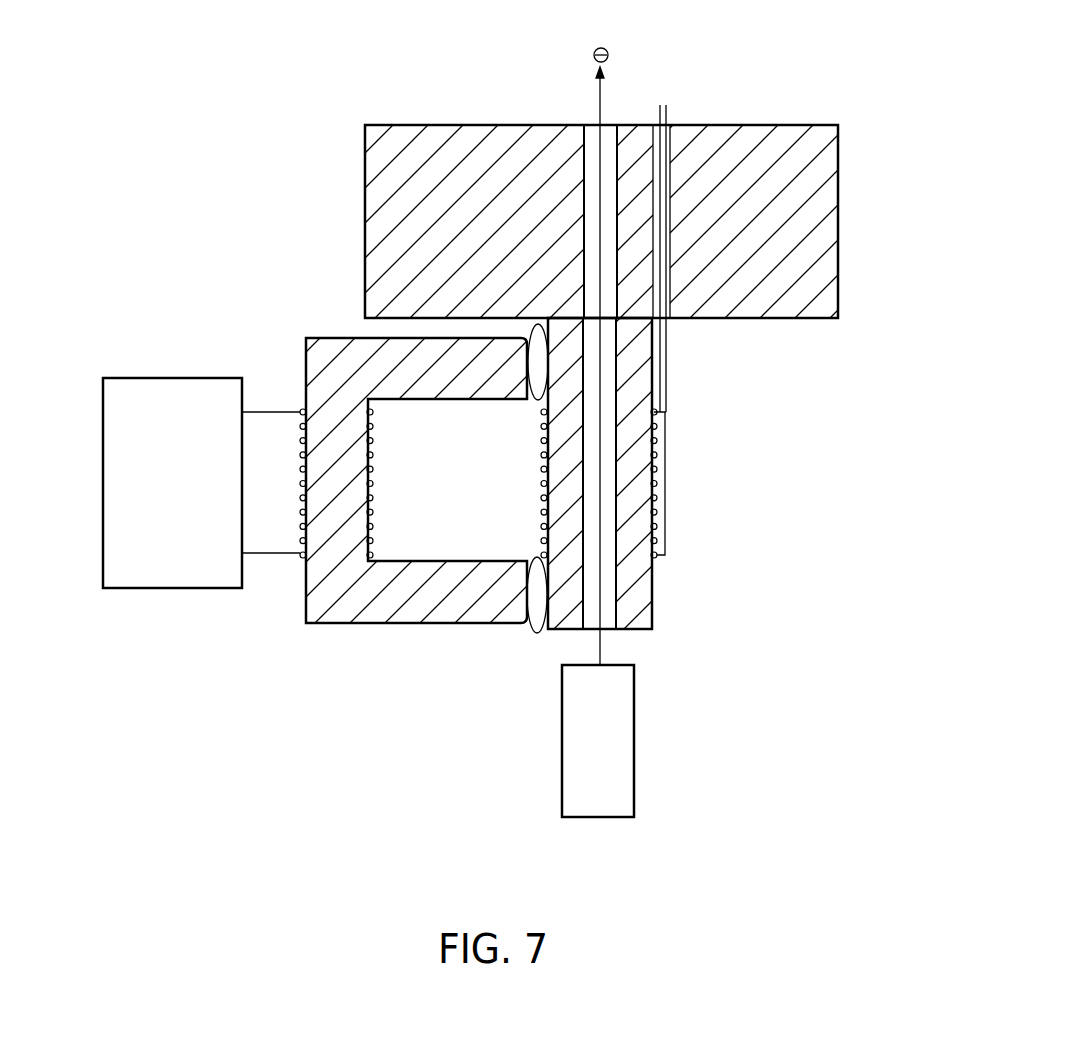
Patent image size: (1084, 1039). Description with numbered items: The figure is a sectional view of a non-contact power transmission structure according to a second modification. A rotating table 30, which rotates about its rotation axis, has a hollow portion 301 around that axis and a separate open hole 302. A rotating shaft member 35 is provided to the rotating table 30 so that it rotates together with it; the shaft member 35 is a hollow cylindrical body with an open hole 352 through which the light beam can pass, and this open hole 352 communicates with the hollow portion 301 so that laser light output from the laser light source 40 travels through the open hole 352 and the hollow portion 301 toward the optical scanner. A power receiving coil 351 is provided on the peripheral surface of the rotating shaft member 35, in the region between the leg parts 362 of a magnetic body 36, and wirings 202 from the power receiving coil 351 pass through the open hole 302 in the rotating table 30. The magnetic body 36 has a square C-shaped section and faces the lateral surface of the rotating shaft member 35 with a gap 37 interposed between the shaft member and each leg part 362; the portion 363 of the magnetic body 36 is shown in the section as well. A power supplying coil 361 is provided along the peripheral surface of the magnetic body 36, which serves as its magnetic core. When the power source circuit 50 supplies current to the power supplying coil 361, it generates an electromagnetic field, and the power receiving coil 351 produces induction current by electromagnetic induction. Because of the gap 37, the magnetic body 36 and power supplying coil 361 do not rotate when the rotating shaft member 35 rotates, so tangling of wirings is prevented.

The rotating table 30 is at (758, 132).
The hollow portion 301 is at (592, 138).
The open hole 302 is at (657, 120).
The wirings 202 is at (667, 374).
The rotating shaft member 35 is at (642, 601).
The power receiving coil 351 is at (537, 412).
The open hole 352 is at (612, 630).
The magnetic body 36 is at (304, 597).
The power supplying coil 361 is at (382, 413).
The leg part 362 is at (456, 372).
The core back portion 363 is at (348, 550).
The gap 37 is at (462, 687).
The laser light source 40 is at (636, 773).
The power source circuit 50 is at (177, 377).